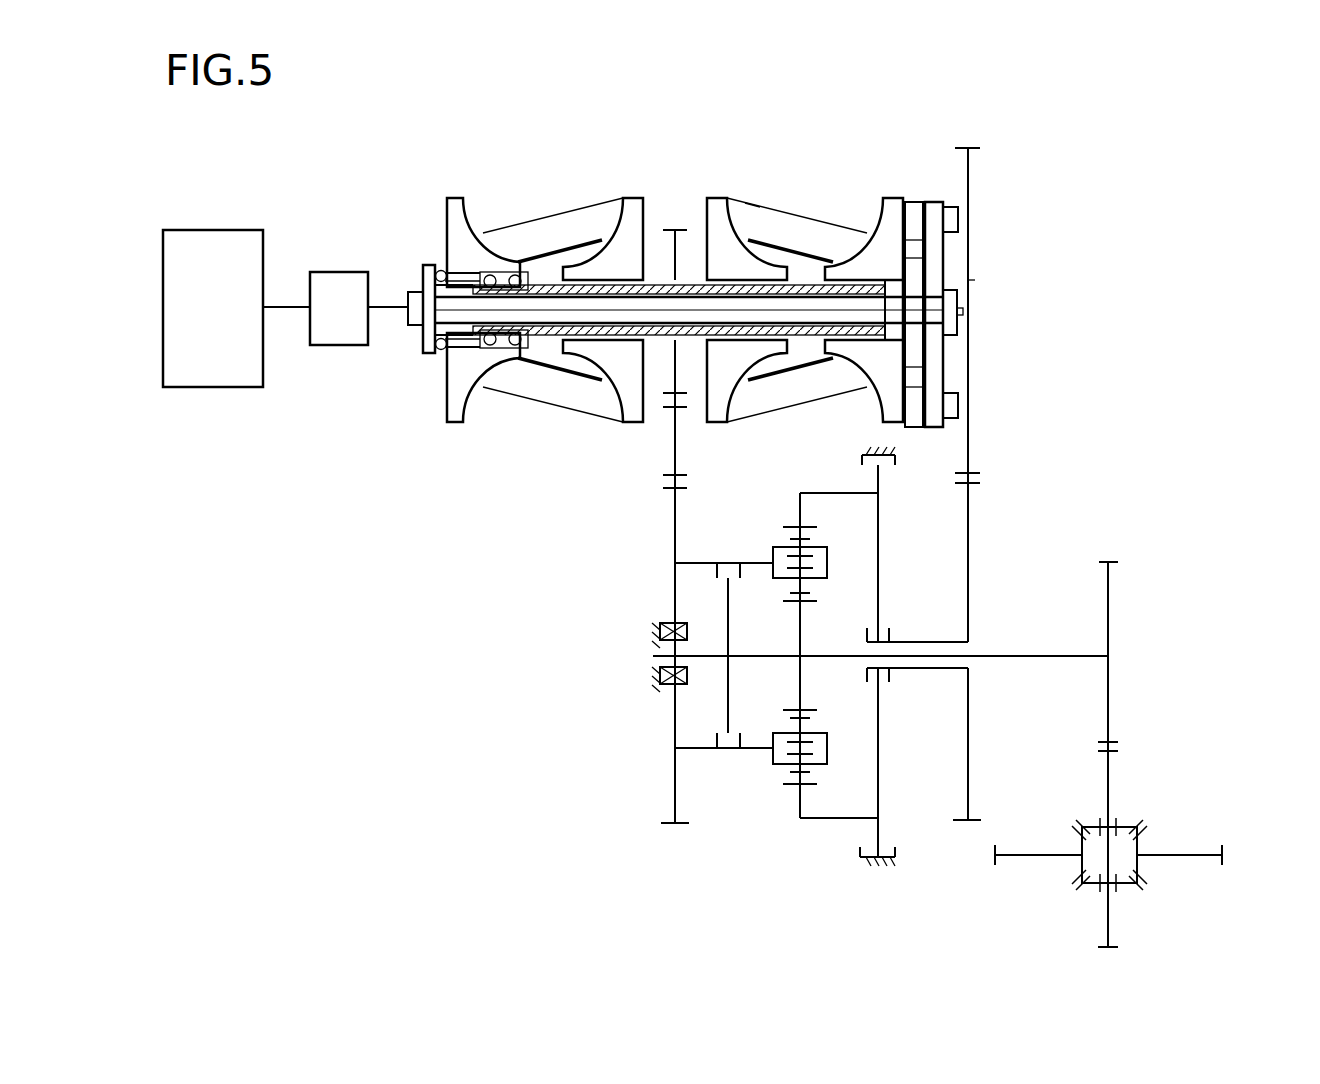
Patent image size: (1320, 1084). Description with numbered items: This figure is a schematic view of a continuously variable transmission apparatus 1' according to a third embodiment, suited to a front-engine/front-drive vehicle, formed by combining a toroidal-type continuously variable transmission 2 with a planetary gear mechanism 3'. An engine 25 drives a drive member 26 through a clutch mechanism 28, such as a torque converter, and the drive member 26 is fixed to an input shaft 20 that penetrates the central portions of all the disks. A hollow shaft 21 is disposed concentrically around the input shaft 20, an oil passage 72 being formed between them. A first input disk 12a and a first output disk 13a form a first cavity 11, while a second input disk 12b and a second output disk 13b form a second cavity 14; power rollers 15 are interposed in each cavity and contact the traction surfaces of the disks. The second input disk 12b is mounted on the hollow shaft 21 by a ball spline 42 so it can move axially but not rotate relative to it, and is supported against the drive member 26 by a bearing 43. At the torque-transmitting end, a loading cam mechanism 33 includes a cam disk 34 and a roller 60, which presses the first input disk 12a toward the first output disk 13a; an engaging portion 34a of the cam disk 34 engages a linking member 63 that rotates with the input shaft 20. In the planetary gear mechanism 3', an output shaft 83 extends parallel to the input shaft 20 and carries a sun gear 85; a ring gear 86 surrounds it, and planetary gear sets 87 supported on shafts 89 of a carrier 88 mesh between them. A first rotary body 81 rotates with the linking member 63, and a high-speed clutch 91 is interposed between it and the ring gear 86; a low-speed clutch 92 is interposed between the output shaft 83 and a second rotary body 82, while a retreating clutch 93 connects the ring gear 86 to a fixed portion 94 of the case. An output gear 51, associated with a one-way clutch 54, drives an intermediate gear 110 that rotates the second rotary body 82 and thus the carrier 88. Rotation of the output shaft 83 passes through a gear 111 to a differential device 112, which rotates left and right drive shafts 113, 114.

The continuously variable transmission apparatus 1' is at (740, 62).
The toroidal-type continuously variable transmission 2 is at (657, 138).
The planetary gear mechanism 3' is at (1108, 693).
The first cavity 11 is at (822, 148).
The first input disk 12a is at (880, 230).
The second input disk 12b is at (460, 198).
The first output disk 13a is at (720, 200).
The second output disk 13b is at (630, 200).
The second cavity 14 is at (534, 175).
The power rollers 15 is at (575, 234).
The input shaft 20 is at (548, 312).
The hollow shaft 21 is at (605, 338).
The engine 25 is at (213, 230).
The drive member 26 is at (427, 276).
The clutch mechanism 28 is at (338, 272).
The loading cam mechanism 33 is at (962, 142).
The cam disk 34 is at (935, 200).
The engaging portion 34a is at (960, 222).
The ball spline 42 is at (490, 274).
The bearing 43 is at (441, 350).
The output gear 51 is at (675, 248).
The one-way clutch 54 is at (660, 690).
The roller 60 is at (912, 218).
The linking member 63 is at (970, 278).
The oil passage 72 is at (752, 238).
The first rotary body 81 is at (928, 640).
The second rotary body 82 is at (675, 582).
The output shaft 83 is at (1040, 655).
The sun gear 85 is at (797, 642).
The ring gear 86 is at (796, 526).
The planetary gear set 87 is at (791, 575).
The carrier 88 is at (828, 563).
The shafts 89 is at (818, 545).
The high-speed clutch 91 is at (892, 685).
The low-speed clutch 92 is at (728, 560).
The retreating clutch 93 is at (895, 853).
The fixed portion of the transmission case 94 is at (864, 868).
The intermediate gear 110 is at (668, 478).
The gear 111 is at (1110, 610).
The differential device 112 is at (1150, 812).
The left drive shaft 113 is at (1040, 858).
The right drive shaft 114 is at (1190, 858).